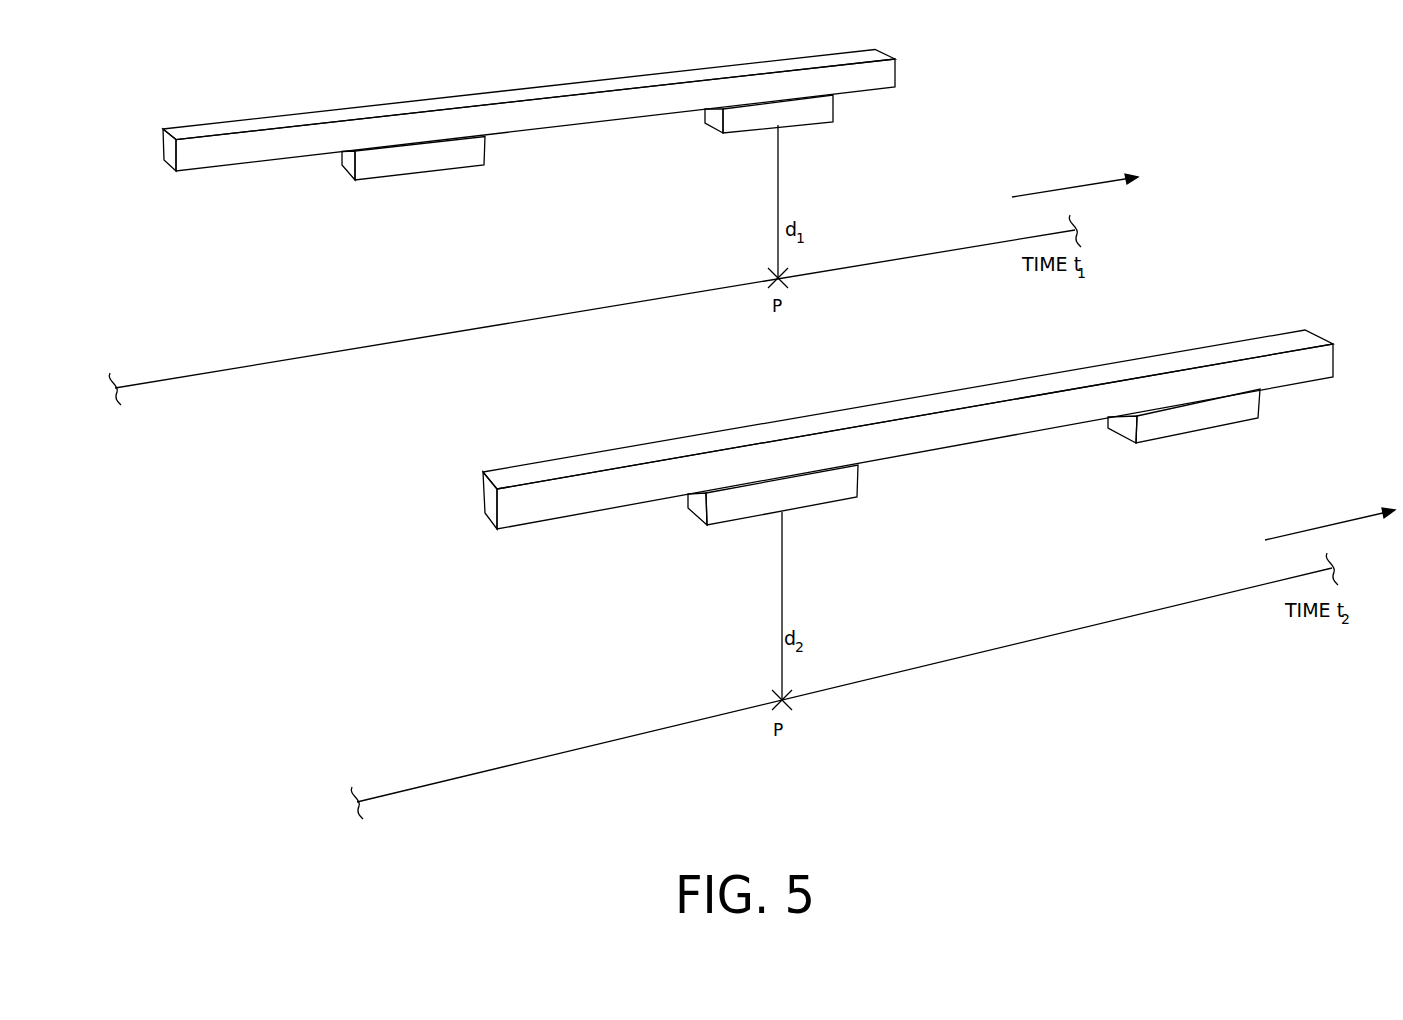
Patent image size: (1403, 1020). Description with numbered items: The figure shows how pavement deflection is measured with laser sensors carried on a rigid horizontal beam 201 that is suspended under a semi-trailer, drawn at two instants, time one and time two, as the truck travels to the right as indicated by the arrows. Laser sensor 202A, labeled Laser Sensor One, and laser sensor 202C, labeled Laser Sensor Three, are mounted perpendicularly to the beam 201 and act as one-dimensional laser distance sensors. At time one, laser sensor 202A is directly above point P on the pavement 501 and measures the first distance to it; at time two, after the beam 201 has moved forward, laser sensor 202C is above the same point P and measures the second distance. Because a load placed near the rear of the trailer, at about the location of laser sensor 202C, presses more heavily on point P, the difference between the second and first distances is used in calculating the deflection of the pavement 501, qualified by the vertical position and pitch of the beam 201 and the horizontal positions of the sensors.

The beam 201 is at (529, 93).
The laser scanning sensor 202A is at (717, 110).
The laser scanning sensor 202C is at (358, 156).
The pavement 501 is at (697, 295).